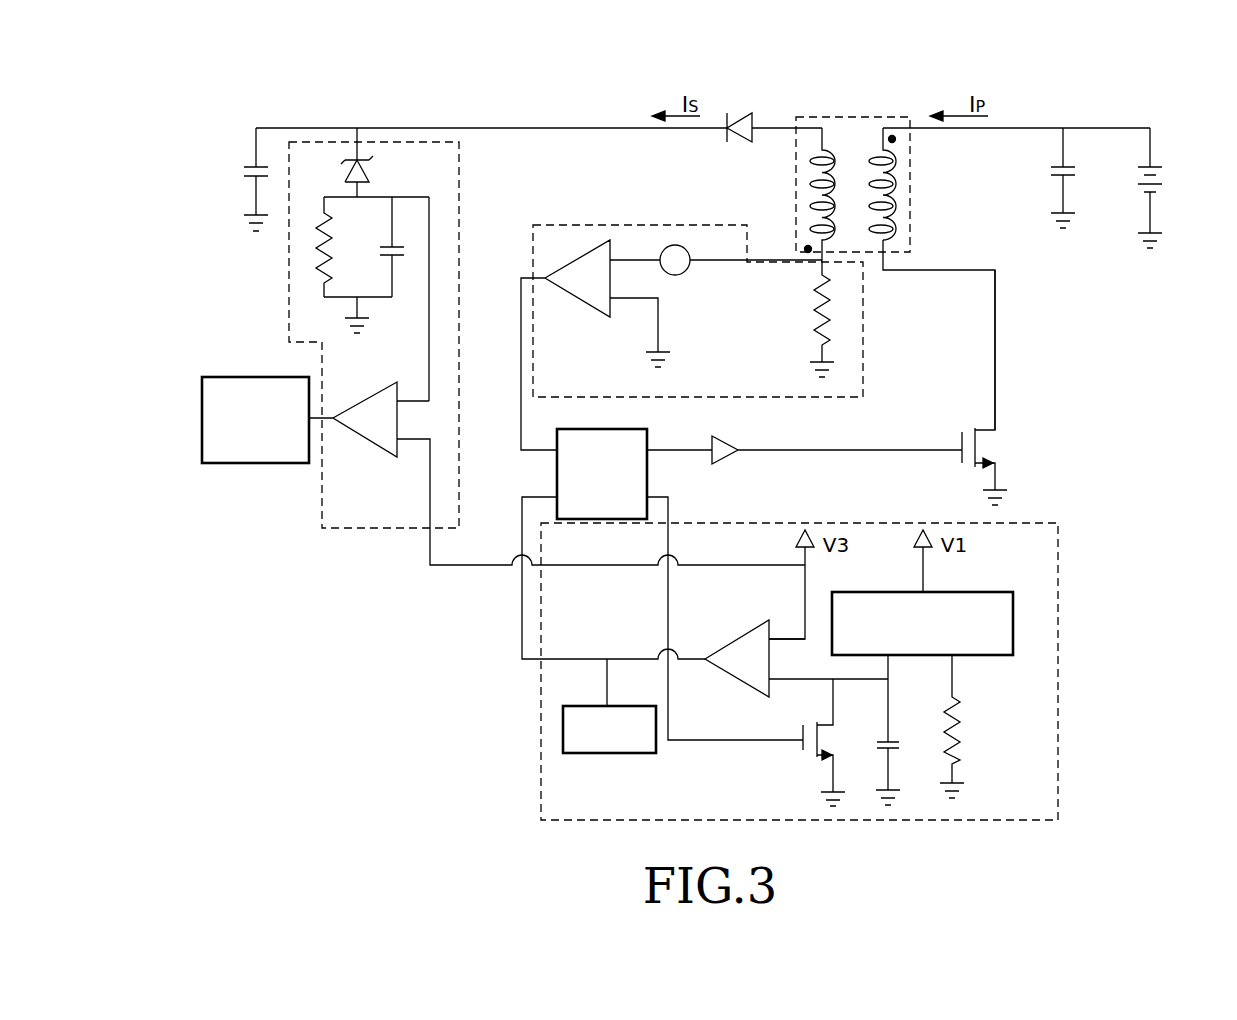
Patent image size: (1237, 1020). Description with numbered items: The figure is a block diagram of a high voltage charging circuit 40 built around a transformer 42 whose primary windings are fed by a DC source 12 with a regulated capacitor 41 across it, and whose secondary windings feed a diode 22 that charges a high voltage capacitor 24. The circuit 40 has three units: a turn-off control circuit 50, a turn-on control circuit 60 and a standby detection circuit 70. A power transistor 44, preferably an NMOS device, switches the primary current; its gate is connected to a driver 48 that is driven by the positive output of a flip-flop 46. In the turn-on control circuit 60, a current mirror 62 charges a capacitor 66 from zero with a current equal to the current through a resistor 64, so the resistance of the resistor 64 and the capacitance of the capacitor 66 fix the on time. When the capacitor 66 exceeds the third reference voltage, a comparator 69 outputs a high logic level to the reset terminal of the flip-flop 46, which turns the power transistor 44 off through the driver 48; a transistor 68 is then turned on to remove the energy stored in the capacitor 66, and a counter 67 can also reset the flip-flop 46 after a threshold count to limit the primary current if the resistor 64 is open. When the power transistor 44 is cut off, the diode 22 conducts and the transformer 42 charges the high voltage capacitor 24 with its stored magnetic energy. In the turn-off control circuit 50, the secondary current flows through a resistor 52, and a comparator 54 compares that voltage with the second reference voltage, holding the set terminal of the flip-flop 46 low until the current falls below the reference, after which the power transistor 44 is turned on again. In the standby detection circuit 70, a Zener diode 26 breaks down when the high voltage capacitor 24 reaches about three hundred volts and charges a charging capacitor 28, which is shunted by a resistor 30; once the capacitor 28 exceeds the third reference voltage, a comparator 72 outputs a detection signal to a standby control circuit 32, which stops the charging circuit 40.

The DC source 12 is at (1161, 179).
The diode 22 is at (757, 118).
The high voltage capacitor 24 is at (256, 166).
The Zener diode 26 is at (372, 157).
The charging capacitor 28 is at (404, 243).
The resistor 30 is at (316, 263).
The standby control circuit 32 is at (252, 464).
The high voltage charging circuit 40 is at (1202, 75).
The capacitor 41 is at (1071, 179).
The transformer 42 is at (853, 131).
The power transistor 44 is at (1002, 451).
The flip-flop 46 is at (649, 435).
The driver 48 is at (737, 438).
The turn-off control circuit 50 is at (866, 340).
The resistor 52 is at (817, 309).
The comparator 54 is at (586, 241).
The turn-on control circuit 60 is at (1058, 601).
The current mirror 62 is at (995, 656).
The resistor 64 is at (967, 745).
The capacitor 66 is at (897, 751).
The counter 67 is at (655, 753).
The transistor 68 is at (808, 761).
The comparator 69 is at (740, 633).
The standby detection circuit 70 is at (324, 529).
The comparator 72 is at (372, 449).